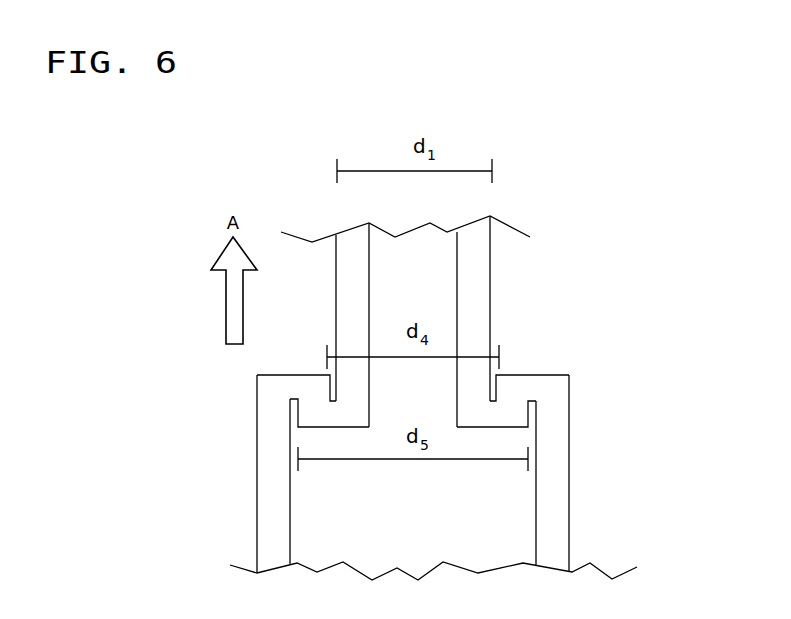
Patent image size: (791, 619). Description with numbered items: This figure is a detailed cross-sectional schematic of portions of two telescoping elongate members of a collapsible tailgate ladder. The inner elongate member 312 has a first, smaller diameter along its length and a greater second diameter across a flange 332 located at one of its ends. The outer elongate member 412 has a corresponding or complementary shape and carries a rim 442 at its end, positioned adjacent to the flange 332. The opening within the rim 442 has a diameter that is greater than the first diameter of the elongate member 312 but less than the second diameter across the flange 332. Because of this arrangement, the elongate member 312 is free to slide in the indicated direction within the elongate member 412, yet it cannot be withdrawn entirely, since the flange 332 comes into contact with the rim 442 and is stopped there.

The elongate member 312 is at (510, 265).
The rim 442 is at (520, 383).
The elongate member 412 is at (585, 405).
The flange 332 is at (519, 419).